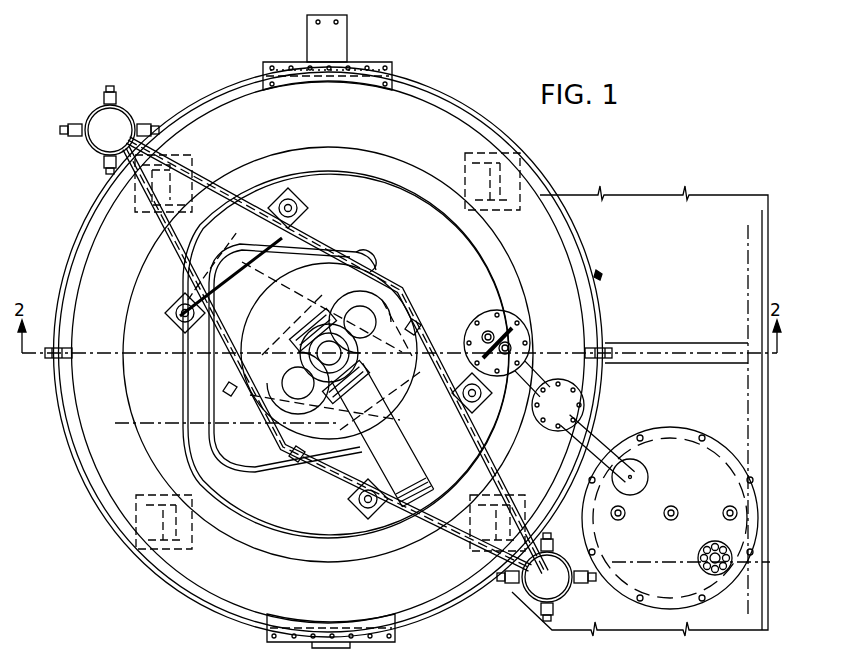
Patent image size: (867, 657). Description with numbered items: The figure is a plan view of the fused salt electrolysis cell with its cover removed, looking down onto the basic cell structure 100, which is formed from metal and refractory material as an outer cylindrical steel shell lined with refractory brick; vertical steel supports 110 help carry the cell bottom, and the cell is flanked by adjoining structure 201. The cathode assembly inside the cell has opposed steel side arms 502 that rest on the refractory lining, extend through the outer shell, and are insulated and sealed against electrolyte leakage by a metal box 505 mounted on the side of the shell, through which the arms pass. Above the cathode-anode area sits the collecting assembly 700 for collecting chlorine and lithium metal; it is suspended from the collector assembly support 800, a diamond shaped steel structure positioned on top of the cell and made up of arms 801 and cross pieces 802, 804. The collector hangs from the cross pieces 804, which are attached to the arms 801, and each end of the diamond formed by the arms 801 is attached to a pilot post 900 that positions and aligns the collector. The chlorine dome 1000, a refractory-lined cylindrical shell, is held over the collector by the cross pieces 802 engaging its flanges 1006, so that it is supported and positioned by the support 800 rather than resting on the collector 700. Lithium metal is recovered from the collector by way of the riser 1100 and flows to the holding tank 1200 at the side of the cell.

The cell structure 100 is at (72, 243).
The vertical steel supports 110 is at (520, 160).
The frame 201 is at (146, 656).
The side arms 502 is at (347, 30).
The box 505 is at (380, 62).
The collecting assembly 700 is at (497, 278).
The collector assembly support 800 is at (178, 262).
The arms 801 is at (196, 172).
The cross pieces 802 is at (231, 390).
The cross pieces 804 is at (176, 318).
The pilot posts 900 is at (130, 108).
The chlorine dome 1000 is at (404, 300).
The flanges 1006 is at (420, 322).
The riser 1100 is at (532, 351).
The holding tank 1200 is at (652, 428).